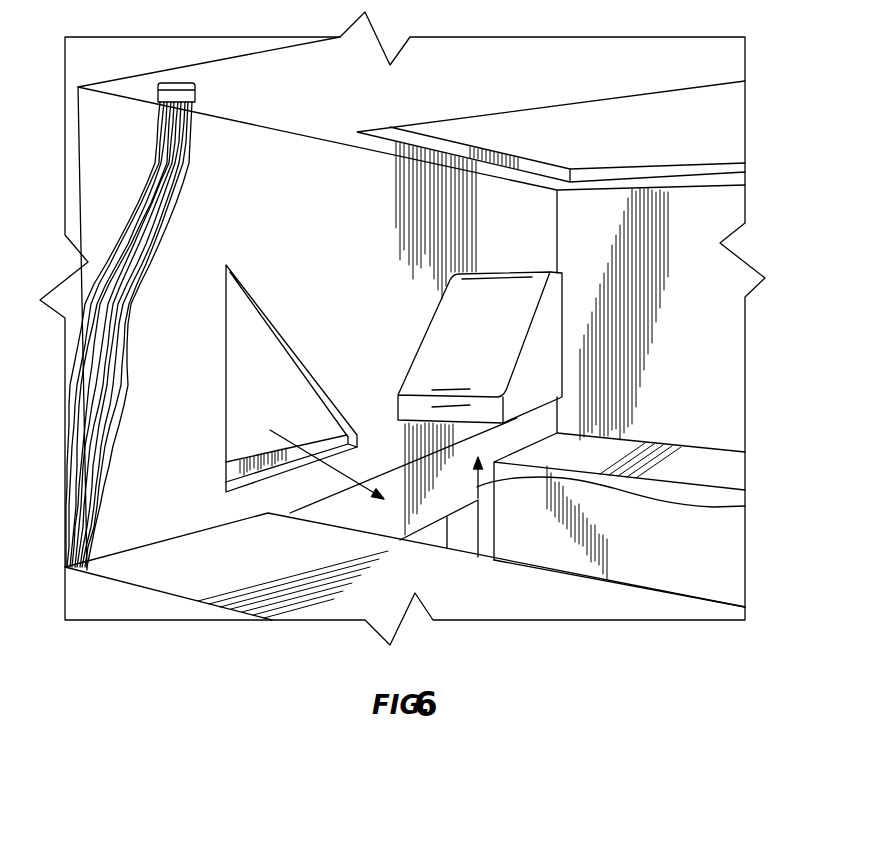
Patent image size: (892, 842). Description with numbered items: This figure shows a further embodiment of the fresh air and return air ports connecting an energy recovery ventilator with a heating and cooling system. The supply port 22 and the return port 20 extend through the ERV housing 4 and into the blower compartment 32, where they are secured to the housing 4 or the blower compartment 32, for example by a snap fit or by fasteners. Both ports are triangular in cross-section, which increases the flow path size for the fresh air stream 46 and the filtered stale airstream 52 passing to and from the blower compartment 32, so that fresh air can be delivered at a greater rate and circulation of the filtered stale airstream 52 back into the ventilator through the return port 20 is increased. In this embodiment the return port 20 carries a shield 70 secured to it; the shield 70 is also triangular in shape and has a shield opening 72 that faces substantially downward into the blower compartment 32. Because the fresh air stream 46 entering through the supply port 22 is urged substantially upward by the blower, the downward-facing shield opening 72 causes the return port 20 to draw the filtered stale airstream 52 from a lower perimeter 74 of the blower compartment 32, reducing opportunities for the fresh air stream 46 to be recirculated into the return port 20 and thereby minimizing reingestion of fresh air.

The ERV housing 4 is at (100, 212).
The return port 20 is at (547, 355).
The supply port 22 is at (237, 380).
The blower compartment 32 is at (712, 354).
The fresh air stream 46 is at (328, 466).
The filtered stale airstream 52 is at (745, 506).
The shield 70 is at (555, 305).
The shield opening 72 is at (632, 450).
The lower perimeter 74 is at (692, 610).